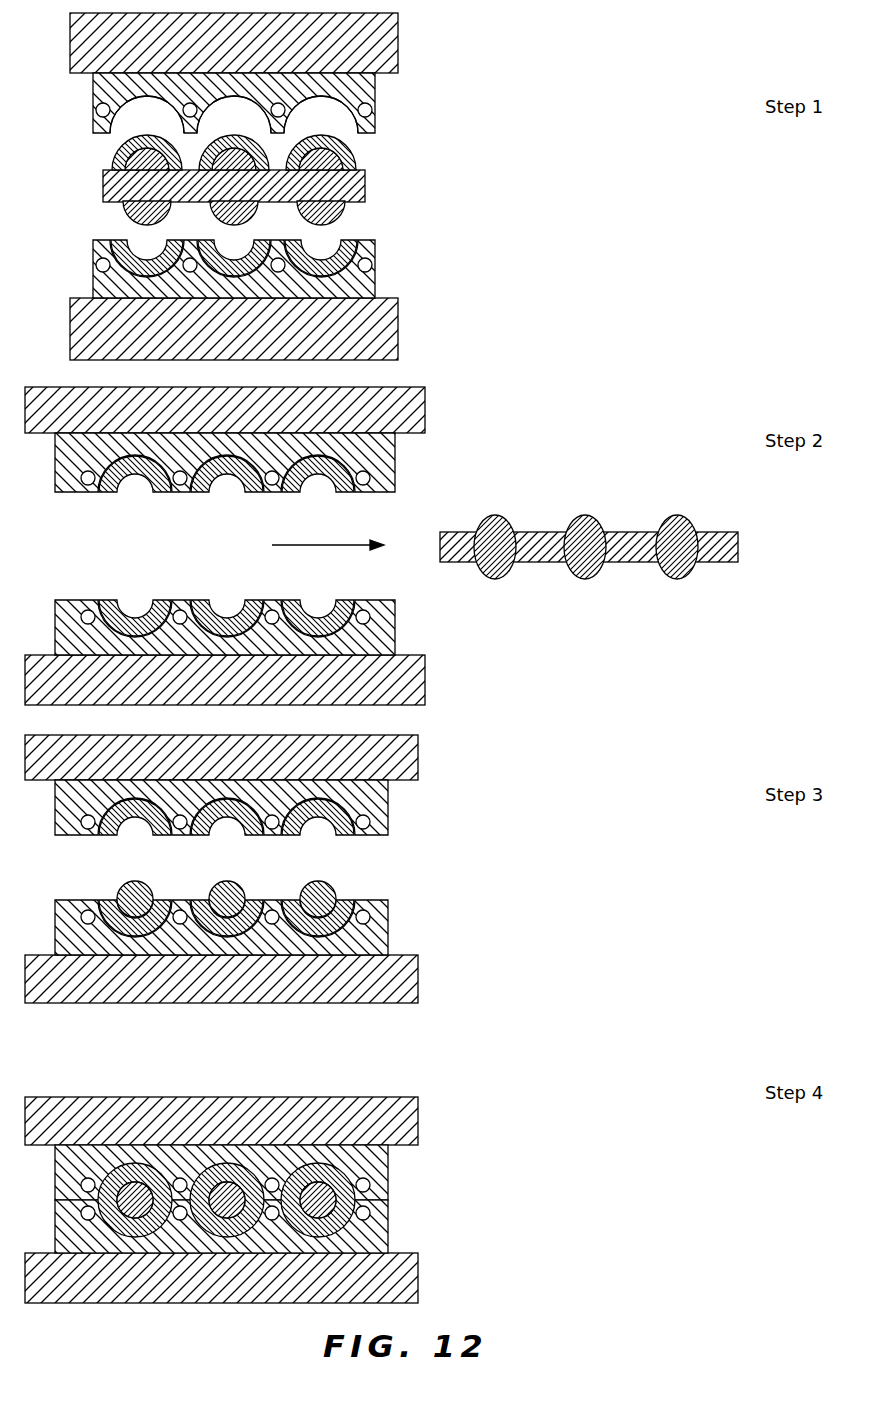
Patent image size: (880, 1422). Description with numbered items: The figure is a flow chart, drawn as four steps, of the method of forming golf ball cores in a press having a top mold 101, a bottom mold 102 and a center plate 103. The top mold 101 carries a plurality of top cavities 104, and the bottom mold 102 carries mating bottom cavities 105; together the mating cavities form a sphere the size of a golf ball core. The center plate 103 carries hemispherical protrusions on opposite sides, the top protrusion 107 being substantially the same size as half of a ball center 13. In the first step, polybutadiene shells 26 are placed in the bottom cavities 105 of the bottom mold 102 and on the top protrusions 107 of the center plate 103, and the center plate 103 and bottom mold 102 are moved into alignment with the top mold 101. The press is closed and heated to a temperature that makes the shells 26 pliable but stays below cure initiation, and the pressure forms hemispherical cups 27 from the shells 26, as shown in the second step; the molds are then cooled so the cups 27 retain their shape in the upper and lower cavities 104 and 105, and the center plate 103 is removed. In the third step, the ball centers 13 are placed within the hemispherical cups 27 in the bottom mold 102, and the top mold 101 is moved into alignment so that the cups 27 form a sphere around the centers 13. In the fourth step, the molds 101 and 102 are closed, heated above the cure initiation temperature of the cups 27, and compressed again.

The top mold 101 is at (375, 83).
The bottom mold 102 is at (373, 300).
The center plate 103 is at (365, 185).
The top cavities 104 is at (147, 112).
The bottom cavities 105 is at (145, 250).
The top protrusion 107 is at (108, 183).
The shells 26 is at (118, 157).
The hemispherical cups 27 is at (318, 488).
The ball center 13 is at (318, 880).